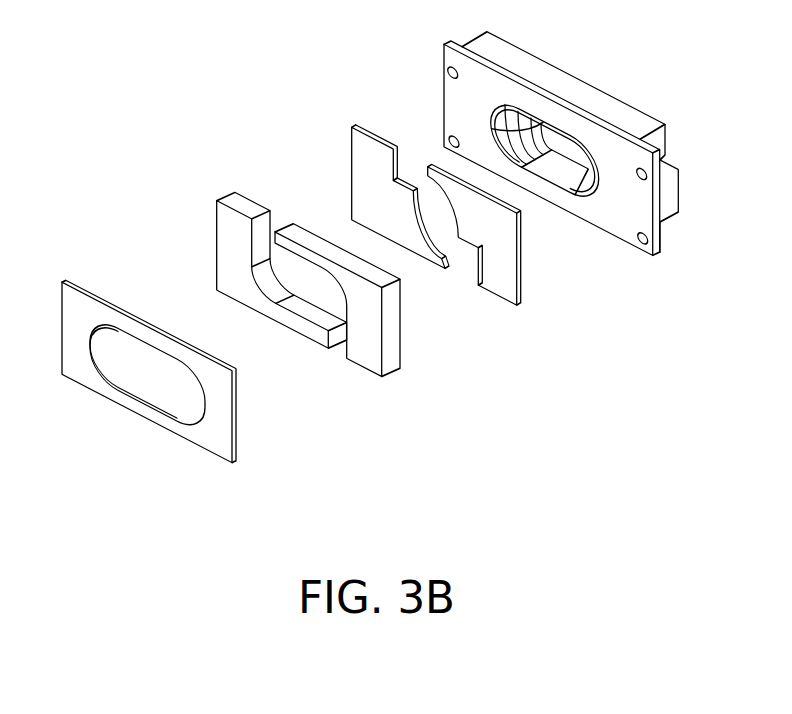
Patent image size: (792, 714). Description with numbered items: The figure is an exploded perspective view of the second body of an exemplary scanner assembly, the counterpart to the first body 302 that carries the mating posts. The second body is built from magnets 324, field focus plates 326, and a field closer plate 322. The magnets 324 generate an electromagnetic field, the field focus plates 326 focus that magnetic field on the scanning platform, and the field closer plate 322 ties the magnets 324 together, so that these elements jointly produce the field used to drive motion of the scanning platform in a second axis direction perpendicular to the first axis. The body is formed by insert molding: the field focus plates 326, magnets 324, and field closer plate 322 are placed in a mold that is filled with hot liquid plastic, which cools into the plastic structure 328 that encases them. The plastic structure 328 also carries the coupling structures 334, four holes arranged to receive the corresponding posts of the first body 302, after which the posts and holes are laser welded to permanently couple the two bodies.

The first body 302 is at (405, 512).
The field closer plate 322 is at (225, 412).
The magnets 324 is at (233, 205).
The field focus plates 326 is at (521, 267).
The plastic structure 328 is at (583, 162).
The second plurality of coupling structures 334 is at (448, 71).